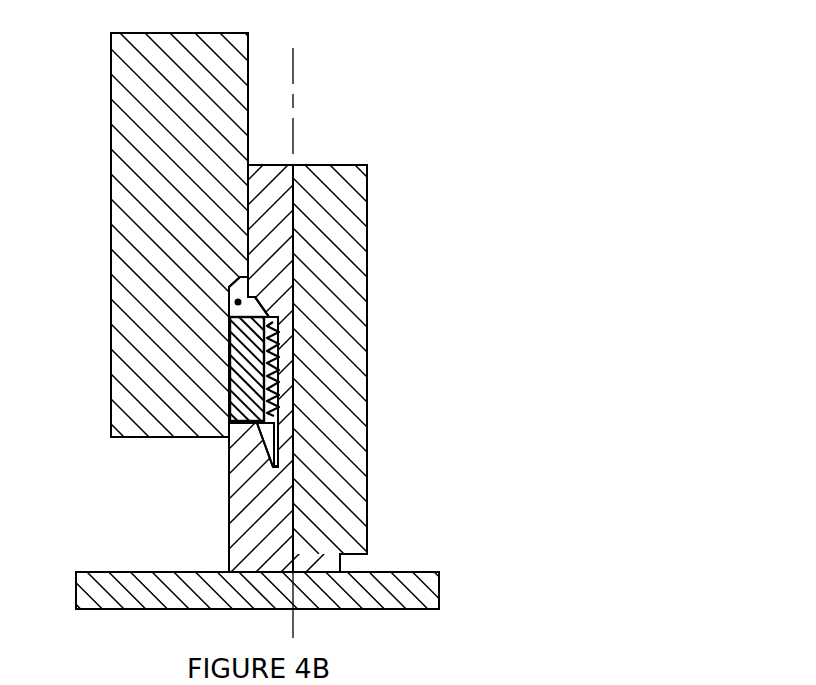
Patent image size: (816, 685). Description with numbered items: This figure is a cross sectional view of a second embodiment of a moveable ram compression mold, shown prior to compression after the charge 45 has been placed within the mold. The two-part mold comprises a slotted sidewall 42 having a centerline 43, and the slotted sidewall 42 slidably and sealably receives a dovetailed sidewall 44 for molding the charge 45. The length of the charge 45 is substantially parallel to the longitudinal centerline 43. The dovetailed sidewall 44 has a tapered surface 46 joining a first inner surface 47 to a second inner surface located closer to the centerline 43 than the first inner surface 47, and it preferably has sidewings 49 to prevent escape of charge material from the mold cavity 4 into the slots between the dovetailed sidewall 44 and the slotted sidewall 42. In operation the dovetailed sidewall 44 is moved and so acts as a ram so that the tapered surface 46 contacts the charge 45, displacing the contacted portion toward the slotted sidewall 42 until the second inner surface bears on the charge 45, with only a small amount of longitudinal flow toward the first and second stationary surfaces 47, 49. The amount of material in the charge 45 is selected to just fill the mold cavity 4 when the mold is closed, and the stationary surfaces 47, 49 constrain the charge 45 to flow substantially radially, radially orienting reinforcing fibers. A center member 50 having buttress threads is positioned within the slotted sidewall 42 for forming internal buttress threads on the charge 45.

The mold cavity 4 is at (228, 301).
The slotted sidewall 42 is at (368, 218).
The centerline 43 is at (293, 143).
The dovetailed sidewall 44 is at (248, 95).
The charge 45 is at (266, 380).
The tapered surface 46 is at (248, 287).
The first inner surface 47 is at (283, 332).
The sidewings 49 is at (275, 436).
The center member 50 is at (248, 460).